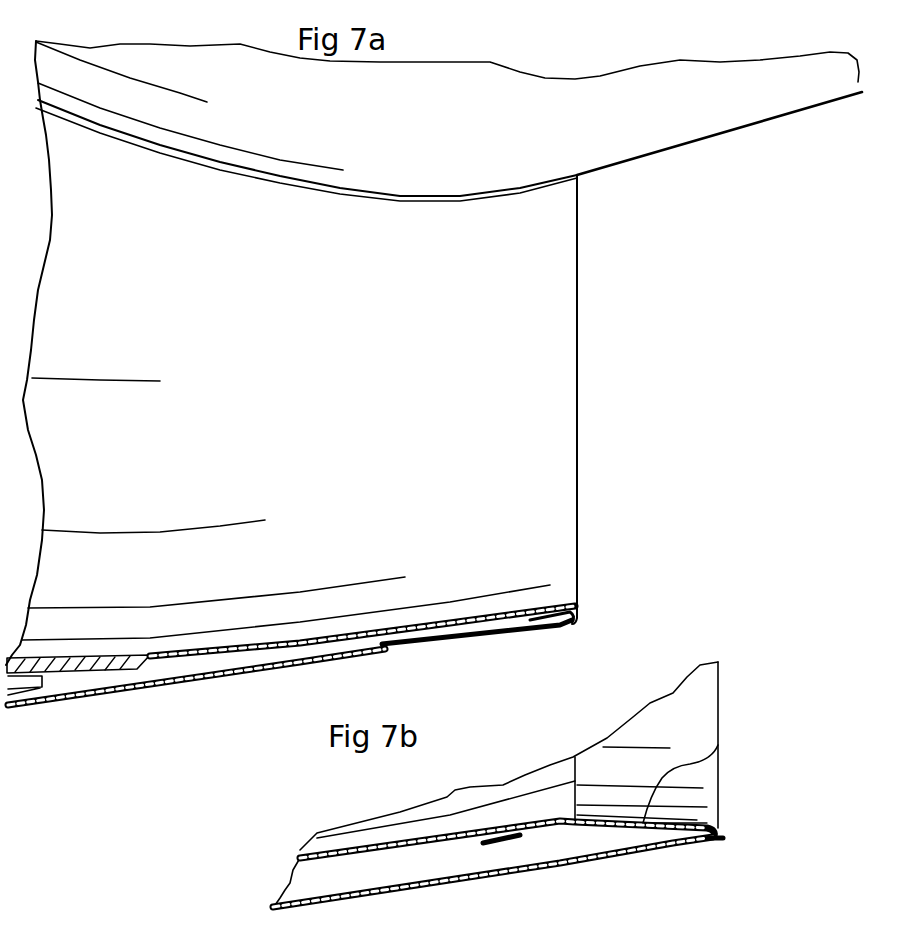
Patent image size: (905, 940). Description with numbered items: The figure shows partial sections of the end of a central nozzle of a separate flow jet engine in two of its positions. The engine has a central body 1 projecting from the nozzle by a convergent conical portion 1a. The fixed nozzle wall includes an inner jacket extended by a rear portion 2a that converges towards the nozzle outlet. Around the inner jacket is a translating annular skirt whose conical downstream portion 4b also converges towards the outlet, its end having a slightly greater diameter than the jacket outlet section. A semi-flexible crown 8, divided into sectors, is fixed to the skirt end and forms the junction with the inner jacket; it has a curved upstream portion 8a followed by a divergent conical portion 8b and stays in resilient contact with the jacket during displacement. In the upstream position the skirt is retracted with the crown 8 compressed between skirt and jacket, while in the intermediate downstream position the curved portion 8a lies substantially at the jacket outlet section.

In FIG. 7A, the central body 1 is at (287, 222).
In FIG. 7B, the central body 1 is at (495, 785).
In FIG. 7A, the convergent conical portion 1a is at (657, 152).
In FIG. 7A, the rear portion of the inner jacket 2a is at (223, 652).
In FIG. 7B, the rear portion of the inner jacket 2a is at (350, 847).
In FIG. 7A, the conical downstream portion of the skirt 4b is at (245, 673).
In FIG. 7B, the conical downstream portion of the skirt 4b is at (457, 883).
In FIG. 7A, the semi-flexible crown 8 is at (487, 623).
In FIG. 7B, the semi-flexible crown 8 is at (722, 837).
In FIG. 7B, the curved upstream portion of the crown 8a is at (577, 827).
In FIG. 7B, the divergent conical portion of the crown 8b is at (718, 752).